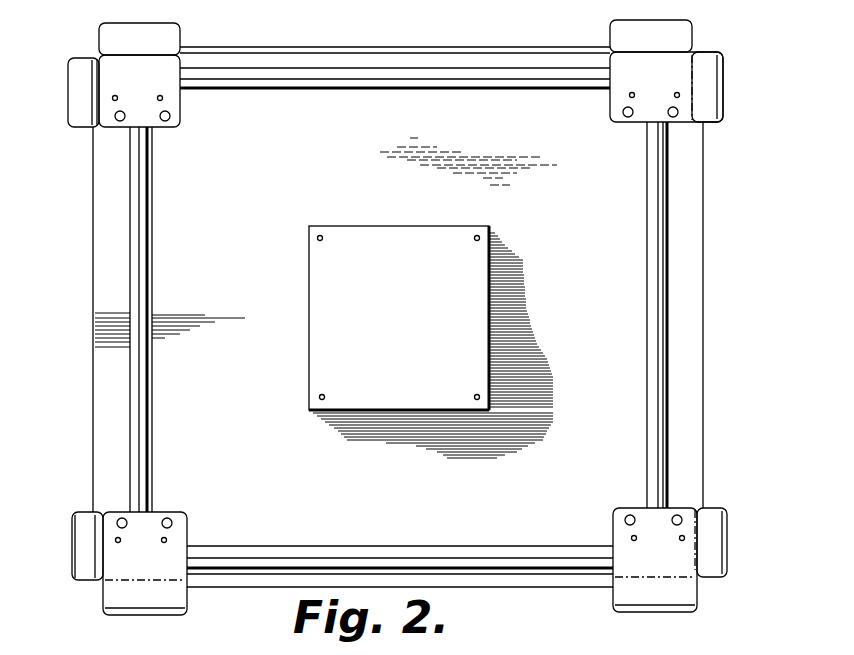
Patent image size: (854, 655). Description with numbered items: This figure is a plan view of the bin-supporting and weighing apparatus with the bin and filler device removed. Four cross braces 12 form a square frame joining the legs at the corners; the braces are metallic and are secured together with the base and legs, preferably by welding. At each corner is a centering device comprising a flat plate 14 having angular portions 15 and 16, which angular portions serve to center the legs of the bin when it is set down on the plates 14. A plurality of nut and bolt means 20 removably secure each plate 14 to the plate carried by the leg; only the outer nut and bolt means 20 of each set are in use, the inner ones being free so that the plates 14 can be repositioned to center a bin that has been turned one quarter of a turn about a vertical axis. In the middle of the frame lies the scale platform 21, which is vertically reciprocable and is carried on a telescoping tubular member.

The cross brace 12 is at (410, 82).
The flat plate 14 is at (177, 535).
The angular portion 15 is at (163, 602).
The angular portion 16 is at (95, 563).
The nut and bolt means 20 is at (125, 116).
The scale platform 21 is at (480, 278).